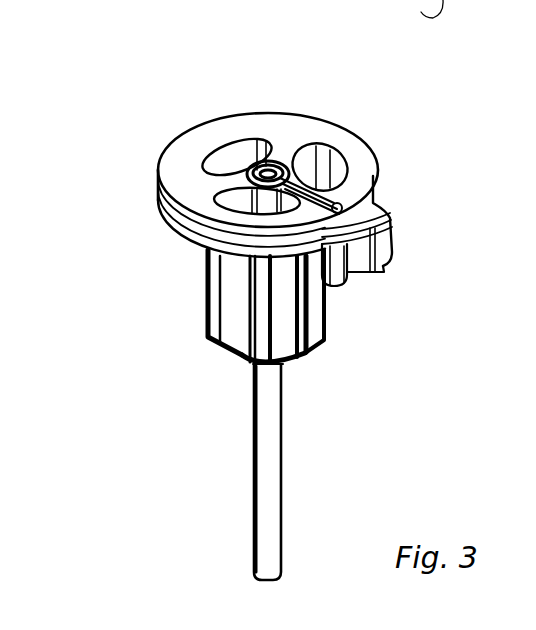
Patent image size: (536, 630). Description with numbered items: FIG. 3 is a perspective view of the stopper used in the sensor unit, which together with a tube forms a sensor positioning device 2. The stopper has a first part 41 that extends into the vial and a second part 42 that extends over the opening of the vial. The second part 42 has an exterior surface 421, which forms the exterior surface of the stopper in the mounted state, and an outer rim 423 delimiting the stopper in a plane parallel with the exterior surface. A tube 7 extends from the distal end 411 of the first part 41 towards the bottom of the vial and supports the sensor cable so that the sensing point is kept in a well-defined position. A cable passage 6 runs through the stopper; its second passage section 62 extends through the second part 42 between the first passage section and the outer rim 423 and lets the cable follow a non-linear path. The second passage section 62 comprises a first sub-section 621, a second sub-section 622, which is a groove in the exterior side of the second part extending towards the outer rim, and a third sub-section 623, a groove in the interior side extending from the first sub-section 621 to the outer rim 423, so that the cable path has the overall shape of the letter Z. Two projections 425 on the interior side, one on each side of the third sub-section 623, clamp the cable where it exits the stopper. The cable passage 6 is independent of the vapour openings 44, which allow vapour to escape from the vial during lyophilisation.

The sensor positioning device 2 is at (294, 295).
The cable passage 6 is at (287, 150).
The tube 7 is at (268, 500).
The first part 41 is at (208, 335).
The second part 42 is at (207, 133).
The vapour openings 44 is at (222, 160).
The second passage section 62 is at (338, 165).
The distal end 411 is at (292, 365).
The exterior surface 421 is at (240, 118).
The outer rim 423 is at (177, 233).
The projections 425 is at (396, 258).
The first sub-section 621 is at (340, 201).
The second sub-section 622 is at (283, 192).
The third sub-section 623 is at (379, 273).